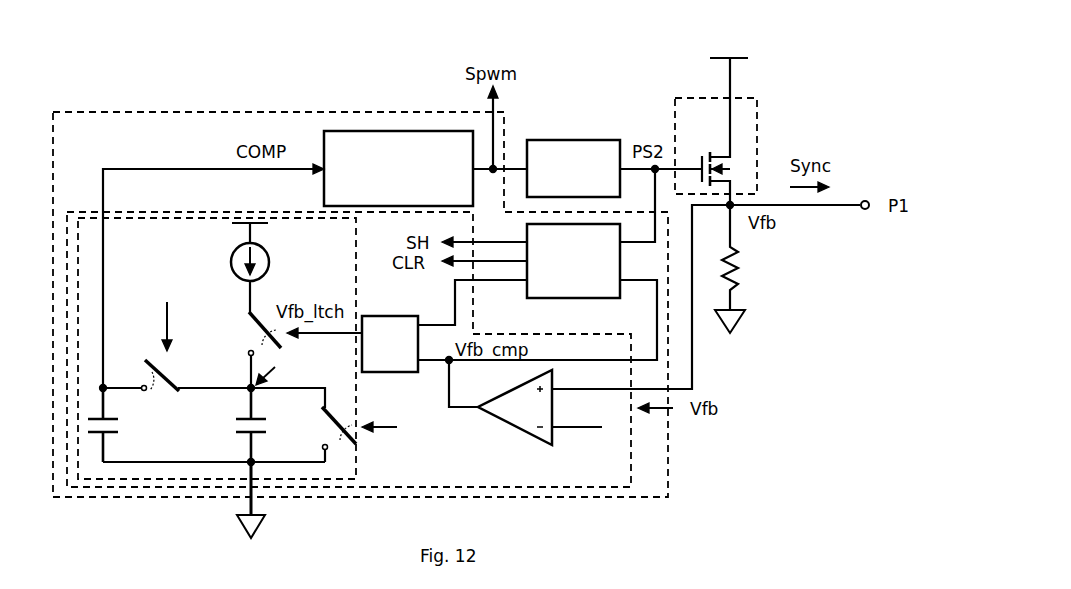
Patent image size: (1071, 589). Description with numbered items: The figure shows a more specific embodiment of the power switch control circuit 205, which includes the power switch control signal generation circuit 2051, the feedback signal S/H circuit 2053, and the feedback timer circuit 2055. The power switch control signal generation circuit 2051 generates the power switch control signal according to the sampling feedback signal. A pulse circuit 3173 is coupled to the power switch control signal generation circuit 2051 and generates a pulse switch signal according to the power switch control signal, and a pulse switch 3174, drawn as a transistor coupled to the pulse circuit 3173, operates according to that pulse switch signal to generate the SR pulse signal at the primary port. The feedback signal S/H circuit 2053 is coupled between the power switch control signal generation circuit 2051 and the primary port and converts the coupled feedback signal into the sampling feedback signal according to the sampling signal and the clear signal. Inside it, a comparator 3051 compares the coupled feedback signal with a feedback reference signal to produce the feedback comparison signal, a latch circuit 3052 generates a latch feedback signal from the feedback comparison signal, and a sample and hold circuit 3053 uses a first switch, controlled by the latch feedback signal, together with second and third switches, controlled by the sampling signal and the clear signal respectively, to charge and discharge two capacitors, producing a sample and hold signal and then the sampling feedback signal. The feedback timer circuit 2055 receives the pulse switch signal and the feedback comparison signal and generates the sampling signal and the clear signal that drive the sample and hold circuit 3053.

The power switch control circuit 205 is at (827, 49).
The power switch control signal generation circuit 2051 is at (398, 168).
The pulse circuit 3173 is at (573, 168).
The pulse switch 3174 is at (716, 131).
The feedback timer circuit 2055 is at (573, 261).
The feedback signal S/H circuit 2053 is at (349, 349).
The sample and hold circuit 3053 is at (258, 378).
The latch circuit 3052 is at (390, 344).
The comparator 3051 is at (500, 418).